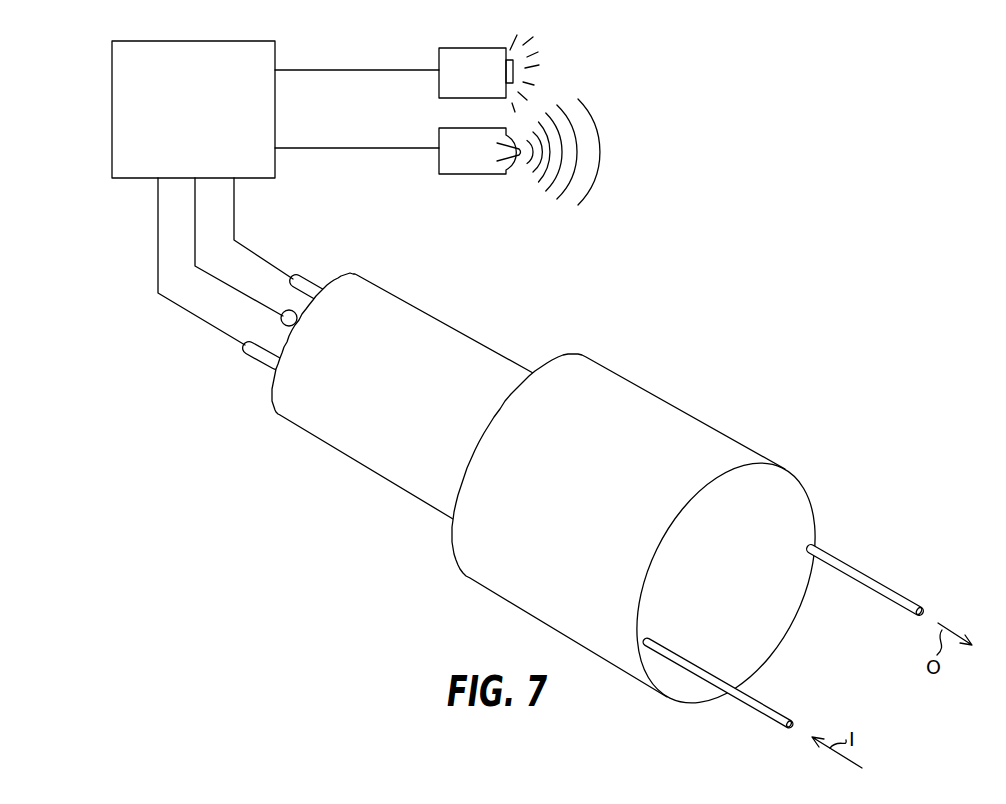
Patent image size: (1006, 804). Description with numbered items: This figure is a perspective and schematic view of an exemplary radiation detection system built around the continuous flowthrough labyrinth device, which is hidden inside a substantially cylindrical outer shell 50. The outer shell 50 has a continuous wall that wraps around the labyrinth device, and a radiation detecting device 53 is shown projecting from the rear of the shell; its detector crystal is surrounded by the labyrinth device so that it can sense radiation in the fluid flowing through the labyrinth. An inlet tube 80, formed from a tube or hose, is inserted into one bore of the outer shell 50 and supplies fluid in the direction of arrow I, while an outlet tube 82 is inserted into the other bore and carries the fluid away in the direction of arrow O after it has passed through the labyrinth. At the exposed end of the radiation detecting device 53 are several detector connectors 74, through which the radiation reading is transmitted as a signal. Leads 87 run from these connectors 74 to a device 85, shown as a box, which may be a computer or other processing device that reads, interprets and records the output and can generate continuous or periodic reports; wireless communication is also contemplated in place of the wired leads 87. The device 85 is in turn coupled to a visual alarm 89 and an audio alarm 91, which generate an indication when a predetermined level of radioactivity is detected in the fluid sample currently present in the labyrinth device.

The outer shell 50 is at (692, 410).
The radiation detecting device 53 is at (483, 348).
The detector connectors 74 is at (312, 280).
The inlet tube 80 is at (760, 707).
The outlet tube 82 is at (877, 580).
The device 85 is at (112, 117).
The leads 87 is at (158, 218).
The visual alarm 89 is at (438, 87).
The audio alarm 91 is at (455, 175).